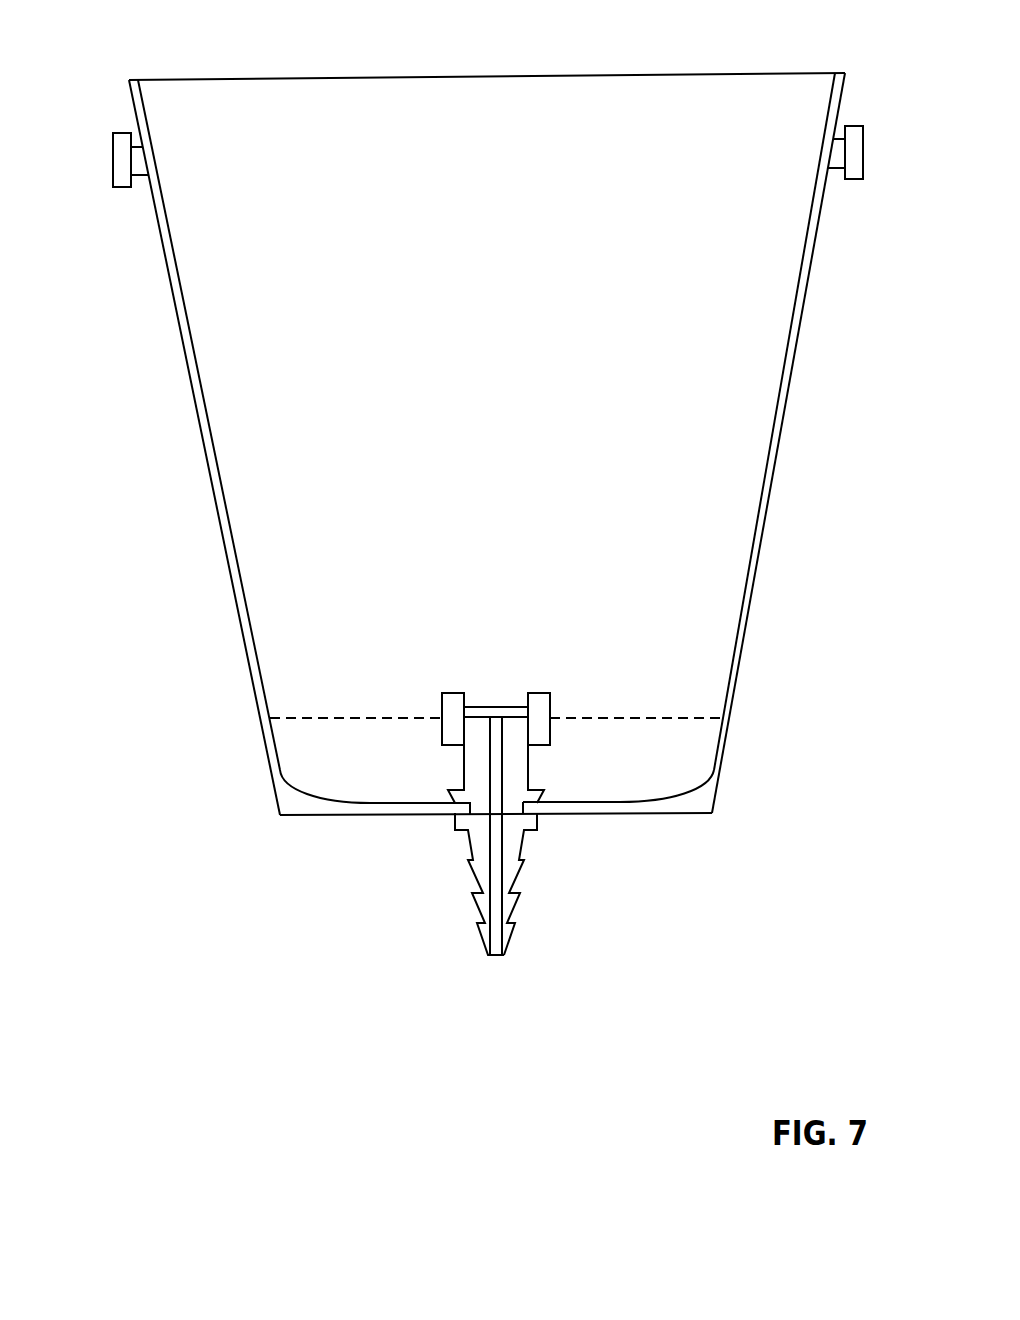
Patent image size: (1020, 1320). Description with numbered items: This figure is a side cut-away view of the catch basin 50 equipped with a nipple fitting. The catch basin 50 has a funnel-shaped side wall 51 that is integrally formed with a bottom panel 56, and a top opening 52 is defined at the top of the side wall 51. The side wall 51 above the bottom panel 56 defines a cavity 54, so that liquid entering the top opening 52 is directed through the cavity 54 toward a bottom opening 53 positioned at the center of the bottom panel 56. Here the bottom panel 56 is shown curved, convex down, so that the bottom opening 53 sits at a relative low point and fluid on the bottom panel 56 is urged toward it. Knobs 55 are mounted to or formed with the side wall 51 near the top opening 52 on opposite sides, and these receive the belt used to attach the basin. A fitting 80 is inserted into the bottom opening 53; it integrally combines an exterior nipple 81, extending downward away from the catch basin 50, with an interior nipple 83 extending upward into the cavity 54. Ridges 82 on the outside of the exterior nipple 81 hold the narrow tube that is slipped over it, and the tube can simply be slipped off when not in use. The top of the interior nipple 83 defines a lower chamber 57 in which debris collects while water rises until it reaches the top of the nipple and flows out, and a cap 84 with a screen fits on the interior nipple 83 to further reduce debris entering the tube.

The catch basin 50 is at (147, 480).
The side wall 51 is at (783, 412).
The top opening 52 is at (525, 88).
The bottom opening 53 is at (476, 808).
The cavity 54 is at (478, 378).
The knobs 55 is at (113, 162).
The bottom panel 56 is at (292, 805).
The lower chamber 57 is at (678, 773).
The fitting 80 is at (465, 826).
The exterior nipple 81 is at (513, 878).
The ridges 82 is at (468, 860).
The interior nipple 83 is at (520, 760).
The cap 84 is at (540, 716).